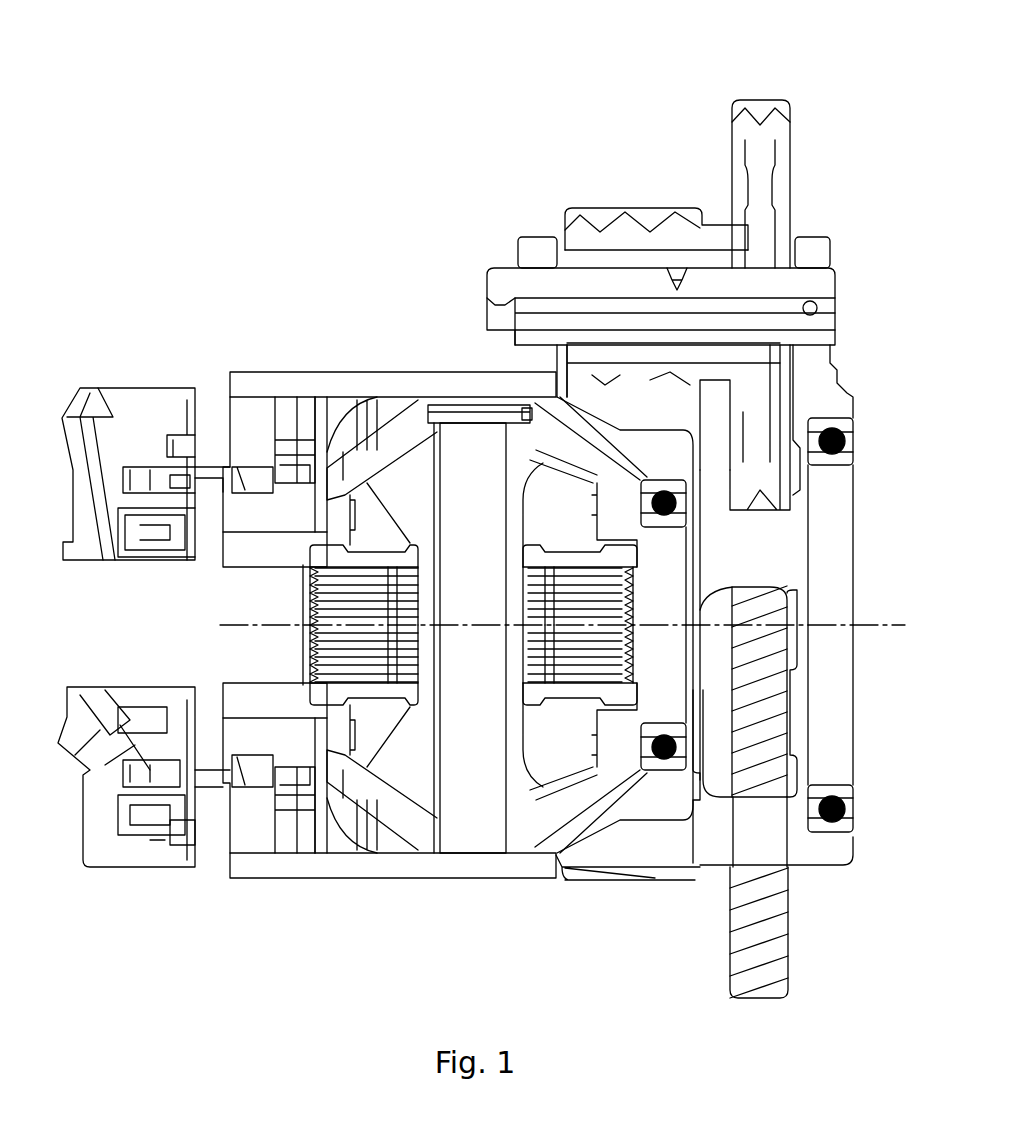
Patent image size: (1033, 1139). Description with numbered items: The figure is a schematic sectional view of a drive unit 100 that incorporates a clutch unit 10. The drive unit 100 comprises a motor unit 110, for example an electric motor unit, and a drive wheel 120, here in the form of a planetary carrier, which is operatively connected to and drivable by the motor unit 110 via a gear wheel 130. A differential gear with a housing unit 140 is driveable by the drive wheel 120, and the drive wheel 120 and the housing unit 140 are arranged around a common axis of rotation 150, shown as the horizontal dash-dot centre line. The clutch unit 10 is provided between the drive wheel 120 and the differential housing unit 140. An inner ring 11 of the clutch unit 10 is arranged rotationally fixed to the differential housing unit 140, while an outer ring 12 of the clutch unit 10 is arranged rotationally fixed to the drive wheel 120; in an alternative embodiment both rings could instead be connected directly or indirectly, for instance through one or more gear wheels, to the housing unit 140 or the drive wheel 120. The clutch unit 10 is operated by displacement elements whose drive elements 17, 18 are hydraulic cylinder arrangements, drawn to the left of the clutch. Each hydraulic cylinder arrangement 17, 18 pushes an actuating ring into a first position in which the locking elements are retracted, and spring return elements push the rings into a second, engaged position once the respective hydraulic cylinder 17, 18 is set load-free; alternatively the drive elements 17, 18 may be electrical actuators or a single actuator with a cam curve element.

The drive unit 100 is at (247, 136).
The clutch unit 10 is at (140, 328).
The inner ring 11 is at (248, 520).
The outer ring 12 is at (250, 838).
The drive element 17 is at (148, 690).
The drive element 18 is at (152, 790).
The motor unit 110 is at (633, 167).
The drive wheel 120 is at (366, 370).
The gear wheel 130 is at (531, 243).
The housing unit 140 is at (410, 828).
The axis of rotation 150 is at (878, 625).